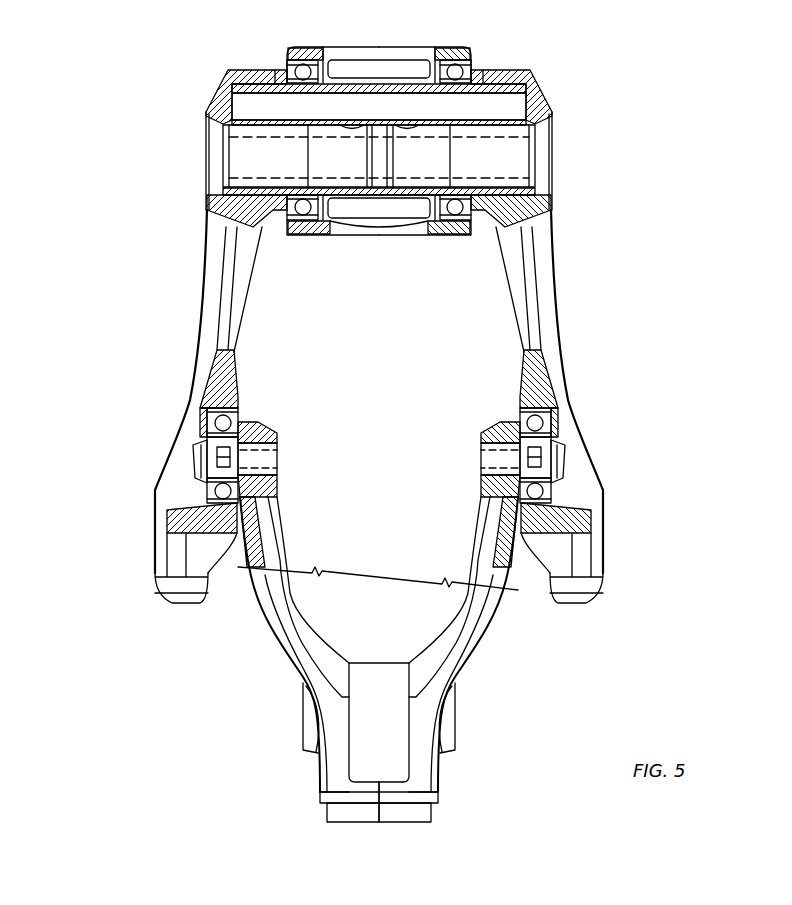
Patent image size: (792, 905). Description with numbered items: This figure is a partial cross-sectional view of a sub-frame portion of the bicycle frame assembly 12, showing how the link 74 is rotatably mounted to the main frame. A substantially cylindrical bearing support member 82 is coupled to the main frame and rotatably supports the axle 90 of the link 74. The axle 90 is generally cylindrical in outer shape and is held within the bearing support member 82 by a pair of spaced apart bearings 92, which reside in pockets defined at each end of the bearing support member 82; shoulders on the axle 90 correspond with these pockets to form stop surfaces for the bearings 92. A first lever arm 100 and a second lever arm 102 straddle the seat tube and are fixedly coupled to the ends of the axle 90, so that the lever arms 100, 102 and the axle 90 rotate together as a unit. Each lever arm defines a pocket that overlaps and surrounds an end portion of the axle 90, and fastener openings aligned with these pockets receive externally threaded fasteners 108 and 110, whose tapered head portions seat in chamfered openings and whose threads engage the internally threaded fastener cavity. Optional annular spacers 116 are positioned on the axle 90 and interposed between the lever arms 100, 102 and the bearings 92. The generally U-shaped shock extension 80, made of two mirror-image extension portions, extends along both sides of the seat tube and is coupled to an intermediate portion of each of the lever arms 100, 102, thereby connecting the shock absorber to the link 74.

The universal joint assembly 12 is at (575, 83).
The link 74 is at (204, 84).
The shock extension 80 is at (261, 625).
The bearing support member 82 is at (362, 47).
The axle 90 is at (522, 75).
The bearings 92 is at (286, 69).
The first lever arm 100 is at (557, 95).
The second lever arm 102 is at (204, 108).
The fastener 108 is at (553, 126).
The fastener 110 is at (205, 160).
The annular spacers 116 is at (286, 236).